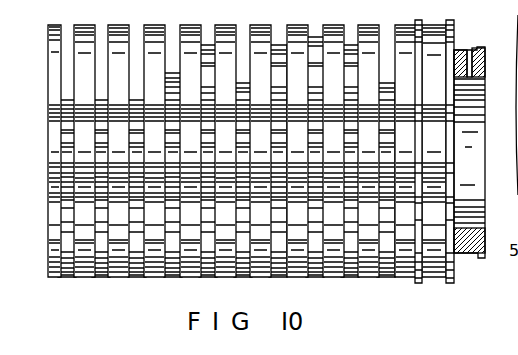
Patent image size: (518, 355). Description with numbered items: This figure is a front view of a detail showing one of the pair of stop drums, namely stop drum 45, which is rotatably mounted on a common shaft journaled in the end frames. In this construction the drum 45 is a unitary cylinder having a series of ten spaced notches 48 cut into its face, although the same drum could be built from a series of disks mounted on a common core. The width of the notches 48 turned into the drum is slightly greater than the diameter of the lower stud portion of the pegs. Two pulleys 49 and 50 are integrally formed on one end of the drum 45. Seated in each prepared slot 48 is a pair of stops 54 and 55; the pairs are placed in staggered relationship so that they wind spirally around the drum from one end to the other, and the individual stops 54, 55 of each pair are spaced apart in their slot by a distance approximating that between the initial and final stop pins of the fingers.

The stop drum 45 is at (455, 20).
The notches 48 is at (352, 278).
The pulley 49 is at (436, 278).
The pulley 50 is at (473, 254).
The stop 54 is at (72, 258).
The stop 55 is at (67, 226).